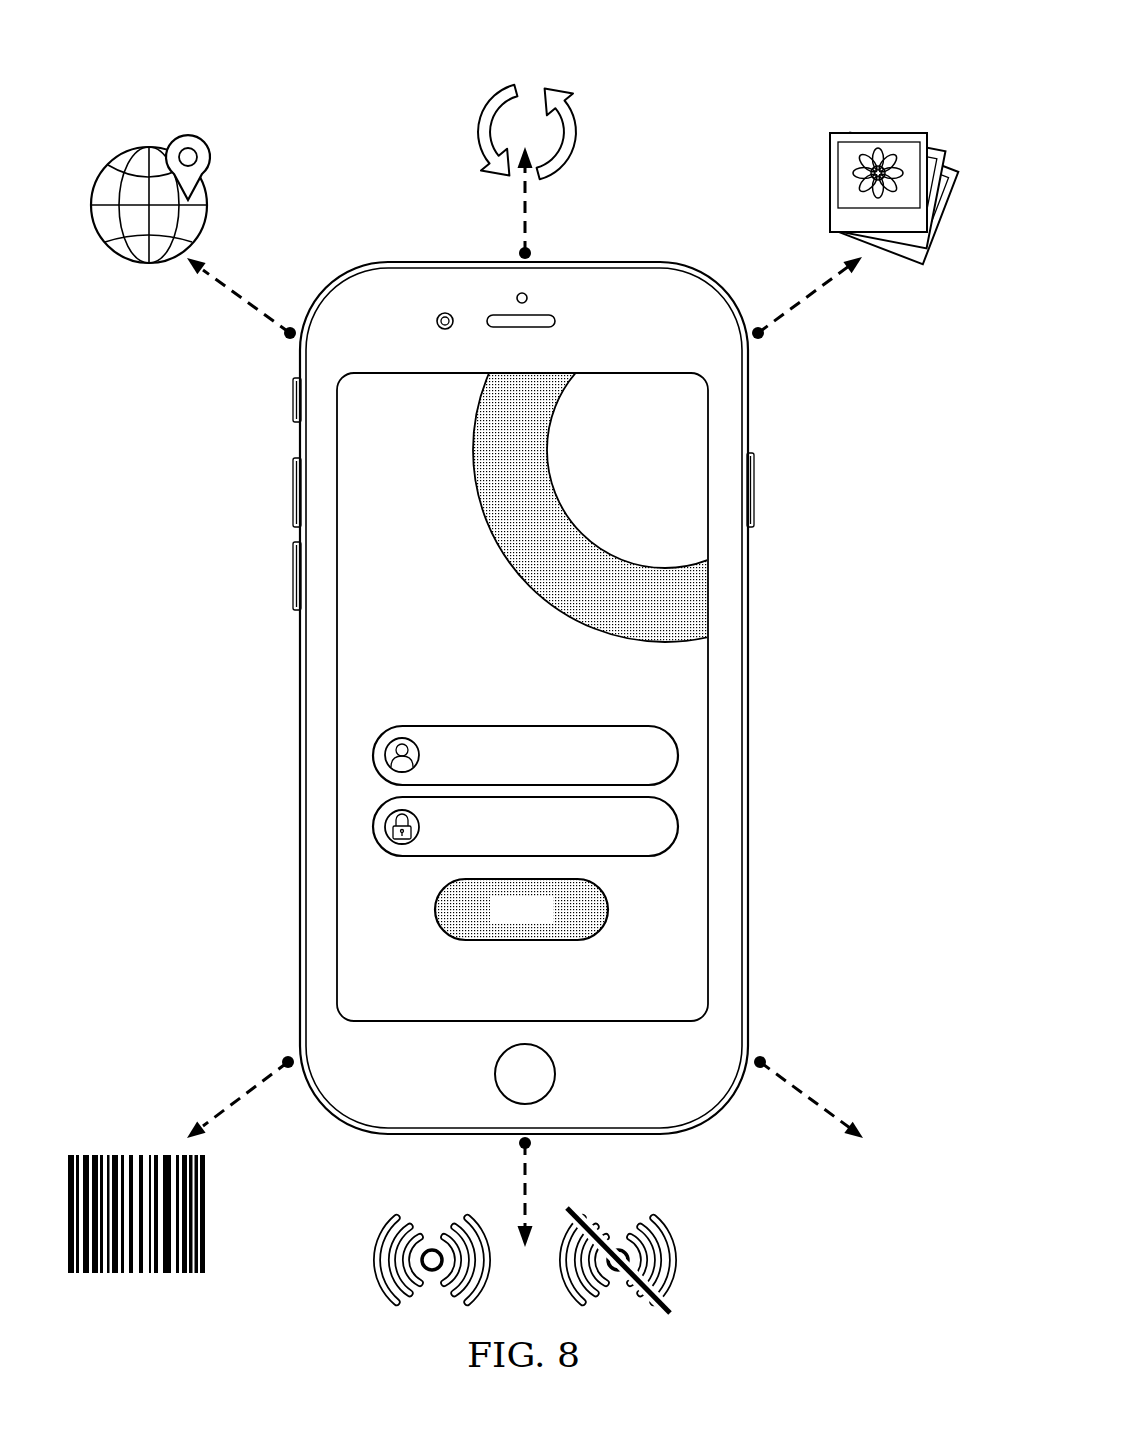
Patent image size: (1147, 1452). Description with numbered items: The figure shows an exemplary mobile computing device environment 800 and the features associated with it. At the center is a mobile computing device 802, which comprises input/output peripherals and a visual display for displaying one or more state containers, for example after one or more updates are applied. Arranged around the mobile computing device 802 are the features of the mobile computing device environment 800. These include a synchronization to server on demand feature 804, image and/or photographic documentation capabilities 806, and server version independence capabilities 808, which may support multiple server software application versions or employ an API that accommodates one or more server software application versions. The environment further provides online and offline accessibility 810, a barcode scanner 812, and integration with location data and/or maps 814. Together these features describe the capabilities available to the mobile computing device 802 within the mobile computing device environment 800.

The mobile computing device environment 800 is at (798, 60).
The mobile computing device 802 is at (670, 258).
The synchronization to server on demand feature 804 is at (478, 137).
The image and/or photographic documentation capabilities 806 is at (878, 133).
The server version independence capabilities 808 is at (912, 1222).
The online and offline accessibility 810 is at (707, 1300).
The barcode scanner 812 is at (205, 1213).
The integration with location data and/or maps 814 is at (130, 147).